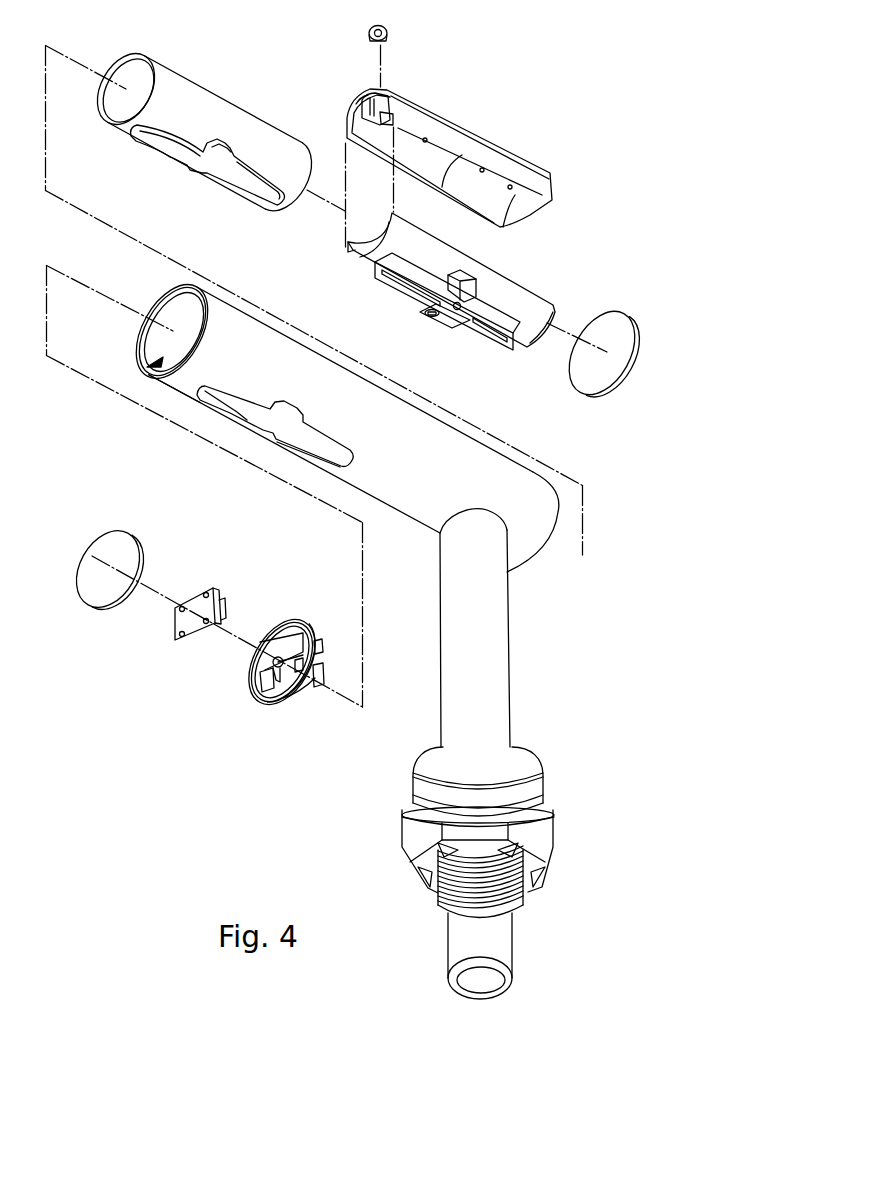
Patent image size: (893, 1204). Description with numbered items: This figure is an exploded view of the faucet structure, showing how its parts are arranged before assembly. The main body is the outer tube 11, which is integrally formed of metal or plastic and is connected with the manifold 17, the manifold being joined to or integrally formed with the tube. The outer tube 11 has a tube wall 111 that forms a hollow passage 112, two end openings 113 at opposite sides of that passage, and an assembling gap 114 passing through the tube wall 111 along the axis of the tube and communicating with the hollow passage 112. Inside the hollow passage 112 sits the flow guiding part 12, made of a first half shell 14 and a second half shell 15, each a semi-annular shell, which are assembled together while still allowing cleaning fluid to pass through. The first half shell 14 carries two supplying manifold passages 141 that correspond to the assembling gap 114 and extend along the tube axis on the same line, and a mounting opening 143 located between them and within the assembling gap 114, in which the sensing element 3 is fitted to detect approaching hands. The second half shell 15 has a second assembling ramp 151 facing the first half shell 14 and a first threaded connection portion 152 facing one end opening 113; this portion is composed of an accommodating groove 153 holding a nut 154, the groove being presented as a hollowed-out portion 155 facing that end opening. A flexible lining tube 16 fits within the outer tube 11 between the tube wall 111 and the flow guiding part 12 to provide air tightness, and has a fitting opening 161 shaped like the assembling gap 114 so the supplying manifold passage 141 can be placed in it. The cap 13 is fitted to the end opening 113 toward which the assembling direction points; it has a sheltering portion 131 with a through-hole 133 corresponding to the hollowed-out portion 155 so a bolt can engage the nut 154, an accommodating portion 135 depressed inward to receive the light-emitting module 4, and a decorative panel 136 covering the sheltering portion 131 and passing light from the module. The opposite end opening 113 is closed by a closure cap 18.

The sensing element 3 is at (426, 316).
The light-emitting module 4 is at (173, 626).
The outer tube 11 is at (311, 422).
The tube wall 111 is at (160, 300).
The hollow passage 112 is at (138, 376).
The end opening 113 is at (138, 343).
The assembling gap 114 is at (236, 418).
The flow guiding part 12 is at (468, 205).
The cap 13 is at (265, 646).
The sheltering portion 131 is at (254, 693).
The through-hole 133 is at (303, 700).
The accommodating portion 135 is at (282, 640).
The decorative panel 136 is at (114, 545).
The first half shell 14 is at (468, 300).
The supplying manifold passage 141 is at (515, 336).
The mounting opening 143 is at (461, 322).
The second half shell 15 is at (452, 127).
The second assembling ramp 151 is at (442, 188).
The first threaded connection portion 152 is at (434, 74).
The accommodating groove 153 is at (387, 102).
The nut 154 is at (387, 32).
The hollowed-out portion 155 is at (356, 103).
The flexible lining tube 16 is at (199, 135).
The fitting opening 161 is at (236, 197).
The manifold 17 is at (495, 680).
The closure cap 18 is at (601, 394).